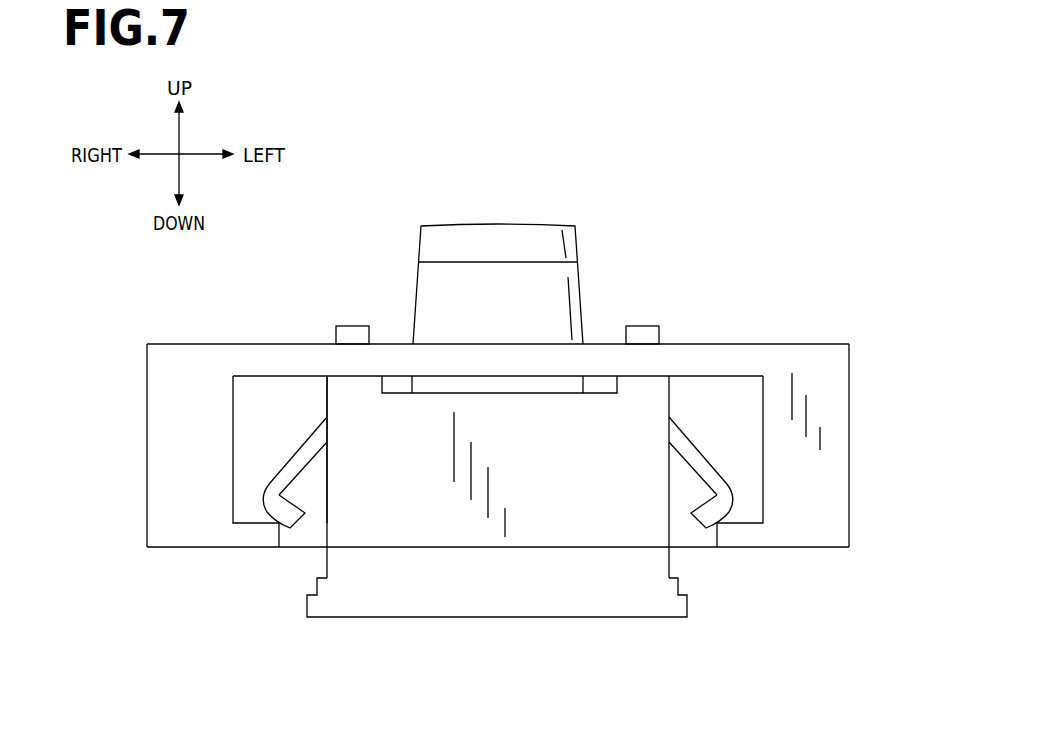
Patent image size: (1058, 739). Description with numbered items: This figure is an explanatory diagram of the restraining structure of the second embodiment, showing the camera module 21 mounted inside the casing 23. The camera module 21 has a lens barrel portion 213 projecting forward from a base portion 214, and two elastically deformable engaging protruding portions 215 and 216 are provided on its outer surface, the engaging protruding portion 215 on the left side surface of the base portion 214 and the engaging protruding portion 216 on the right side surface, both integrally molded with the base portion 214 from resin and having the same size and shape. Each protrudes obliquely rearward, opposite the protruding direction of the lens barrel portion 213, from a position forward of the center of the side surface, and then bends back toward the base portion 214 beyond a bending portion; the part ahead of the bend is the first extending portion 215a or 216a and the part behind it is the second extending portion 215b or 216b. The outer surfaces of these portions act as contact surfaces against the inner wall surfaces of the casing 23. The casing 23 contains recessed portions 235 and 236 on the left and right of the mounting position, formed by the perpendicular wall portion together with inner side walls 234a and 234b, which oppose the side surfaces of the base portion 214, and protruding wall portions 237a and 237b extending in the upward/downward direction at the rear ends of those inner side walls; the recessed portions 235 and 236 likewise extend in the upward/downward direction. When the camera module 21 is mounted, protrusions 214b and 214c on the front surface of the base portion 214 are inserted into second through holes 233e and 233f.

The camera module 21 is at (381, 239).
The lens barrel portion 213 is at (413, 288).
The base portion 214 is at (672, 567).
The protrusion 214b is at (638, 326).
The protrusion 214c is at (357, 326).
The casing 23 is at (147, 392).
The second through hole 233e is at (343, 343).
The second through hole 233f is at (648, 343).
The inner side wall 234a is at (192, 498).
The inner side wall 234b is at (804, 498).
The recessed portion 235 is at (274, 420).
The recessed portion 236 is at (722, 420).
The protruding wall portion 237a is at (258, 535).
The protruding wall portion 237b is at (738, 535).
The engaging protruding portion 215 is at (724, 498).
The first extending portion 215a is at (713, 465).
The second extending portion 215b is at (712, 528).
The engaging protruding portion 216 is at (272, 498).
The first extending portion 216a is at (283, 465).
The second extending portion 216b is at (282, 528).